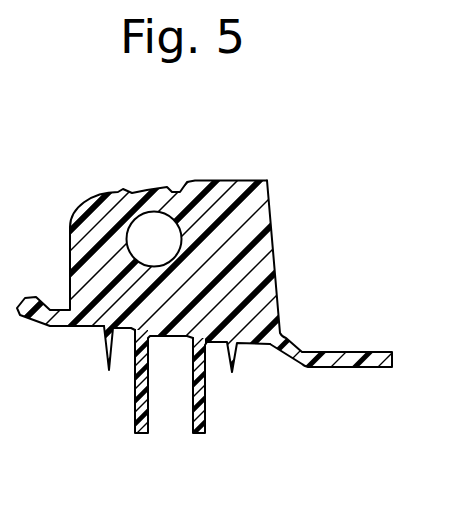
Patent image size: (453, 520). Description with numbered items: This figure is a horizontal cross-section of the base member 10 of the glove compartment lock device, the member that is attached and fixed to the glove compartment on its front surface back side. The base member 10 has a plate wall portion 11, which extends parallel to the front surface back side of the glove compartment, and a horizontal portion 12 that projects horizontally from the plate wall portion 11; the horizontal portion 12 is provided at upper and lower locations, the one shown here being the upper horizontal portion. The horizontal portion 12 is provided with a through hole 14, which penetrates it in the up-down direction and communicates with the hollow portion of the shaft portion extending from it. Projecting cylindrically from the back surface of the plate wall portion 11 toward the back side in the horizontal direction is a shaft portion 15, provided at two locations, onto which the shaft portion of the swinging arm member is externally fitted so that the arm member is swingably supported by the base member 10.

The base member 10 is at (257, 220).
The plate wall portion 11 is at (173, 325).
The horizontal portion 12 is at (247, 287).
The through hole 14 is at (177, 242).
The shaft portion 15 is at (203, 407).